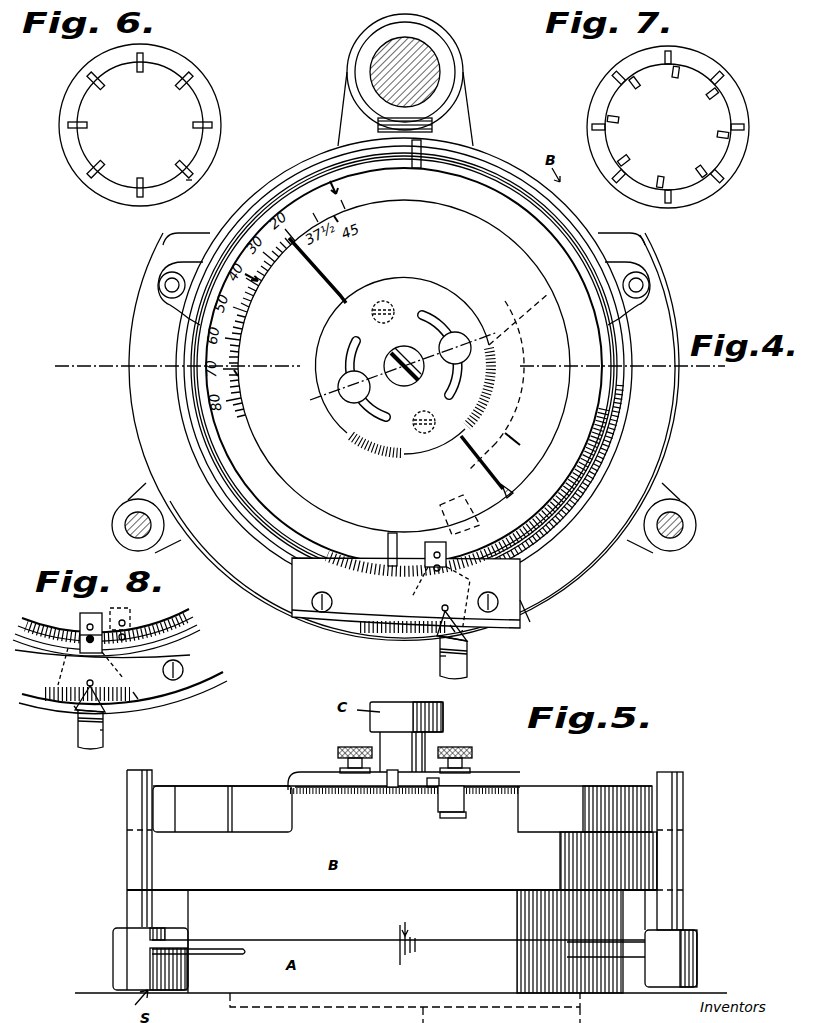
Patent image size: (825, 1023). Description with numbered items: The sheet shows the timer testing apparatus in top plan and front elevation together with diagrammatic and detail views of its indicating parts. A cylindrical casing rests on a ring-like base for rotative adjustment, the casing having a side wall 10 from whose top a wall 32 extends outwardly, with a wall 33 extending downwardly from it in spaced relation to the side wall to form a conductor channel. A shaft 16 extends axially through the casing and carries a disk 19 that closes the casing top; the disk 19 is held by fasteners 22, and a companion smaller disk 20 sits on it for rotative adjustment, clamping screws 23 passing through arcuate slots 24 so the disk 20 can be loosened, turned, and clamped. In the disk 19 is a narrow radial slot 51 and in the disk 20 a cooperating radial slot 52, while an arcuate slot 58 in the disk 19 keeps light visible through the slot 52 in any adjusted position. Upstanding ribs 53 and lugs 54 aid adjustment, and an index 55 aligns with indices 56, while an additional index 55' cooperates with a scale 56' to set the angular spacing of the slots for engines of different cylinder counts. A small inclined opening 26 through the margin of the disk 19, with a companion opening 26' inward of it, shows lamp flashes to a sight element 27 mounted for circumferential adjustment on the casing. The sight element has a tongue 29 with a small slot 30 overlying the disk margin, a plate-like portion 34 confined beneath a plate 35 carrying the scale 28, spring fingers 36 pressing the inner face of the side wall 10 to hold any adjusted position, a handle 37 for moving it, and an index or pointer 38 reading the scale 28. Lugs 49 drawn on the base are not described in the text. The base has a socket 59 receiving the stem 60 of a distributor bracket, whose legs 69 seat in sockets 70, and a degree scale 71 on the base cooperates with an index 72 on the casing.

In FIG. 4, the side wall 10 is at (279, 168).
In FIG. 4, the shaft 16 is at (403, 356).
In FIG. 5, the shaft 16 is at (405, 1008).
In FIG. 4, the disk 19 is at (232, 500).
In FIG. 6, the disk 19 is at (102, 185).
In FIG. 7, the disk 19 is at (735, 163).
In FIG. 8, the disk 19 is at (106, 632).
In FIG. 4, the companion smaller disk 20 is at (404, 366).
In FIG. 6, the companion smaller disk 20 is at (140, 125).
In FIG. 7, the companion smaller disk 20 is at (668, 127).
In FIG. 4, the fasteners 22 is at (381, 300).
In FIG. 4, the clamping screws 23 is at (345, 393).
In FIG. 5, the clamping screws 23 is at (346, 748).
In FIG. 4, the arcuate slots 24 is at (435, 318).
In FIG. 4, the small opening 26 is at (428, 621).
In FIG. 8, the small opening 26 is at (88, 669).
In FIG. 4, the companion opening 26' is at (431, 571).
In FIG. 8, the companion opening 26' is at (87, 642).
In FIG. 4, the sight element 27 is at (470, 685).
In FIG. 8, the sight element 27 is at (80, 743).
In FIG. 5, the sight element 27 is at (470, 809).
In FIG. 8, the scale 28 is at (138, 698).
In FIG. 4, the tongue 29 is at (410, 578).
In FIG. 8, the tongue 29 is at (106, 628).
In FIG. 4, the small slot or opening 30 is at (438, 572).
In FIG. 8, the small slot or opening 30 is at (87, 653).
In FIG. 4, the top wall 32 is at (280, 600).
In FIG. 5, the outer wall 33 is at (593, 861).
In FIG. 4, the plate-like portion 34 is at (505, 618).
In FIG. 5, the plate-like portion 34 is at (432, 790).
In FIG. 4, the plate 35 is at (335, 620).
In FIG. 8, the plate 35 is at (153, 688).
In FIG. 5, the plate 35 is at (340, 790).
In FIG. 4, the spring fingers 36 is at (345, 568).
In FIG. 8, the spring fingers 36 is at (121, 682).
In FIG. 4, the handle 37 is at (440, 661).
In FIG. 8, the handle 37 is at (103, 733).
In FIG. 5, the handle 37 is at (458, 818).
In FIG. 4, the index or pointer 38 is at (455, 632).
In FIG. 8, the index or pointer 38 is at (76, 710).
In FIG. 4, the lug 49 is at (159, 285).
In FIG. 4, the radial slot 51 is at (478, 555).
In FIG. 6, the radial slot 51 is at (192, 180).
In FIG. 7, the radial slot 51 is at (740, 128).
In FIG. 4, the radial slot 52 is at (516, 430).
In FIG. 6, the radial slot 52 is at (205, 126).
In FIG. 7, the radial slot 52 is at (680, 63).
In FIG. 4, the upstanding ribs 53 is at (322, 278).
In FIG. 5, the upstanding ribs 53 is at (300, 774).
In FIG. 4, the lugs 54 is at (420, 190).
In FIG. 5, the lugs 54 is at (390, 788).
In FIG. 4, the index 55 is at (349, 188).
In FIG. 4, the additional index 55' is at (265, 303).
In FIG. 4, the indices 56 is at (367, 227).
In FIG. 4, the cooperating scale 56' is at (255, 381).
In FIG. 4, the arcuate slot 58 is at (528, 360).
In FIG. 4, the socket 59 is at (358, 72).
In FIG. 4, the stem 60 is at (440, 72).
In FIG. 4, the legs 69 is at (128, 500).
In FIG. 5, the legs 69 is at (127, 808).
In FIG. 4, the sockets 70 is at (112, 525).
In FIG. 5, the sockets 70 is at (113, 958).
In FIG. 5, the degree scale 71 is at (395, 930).
In FIG. 5, the index 72 is at (410, 924).